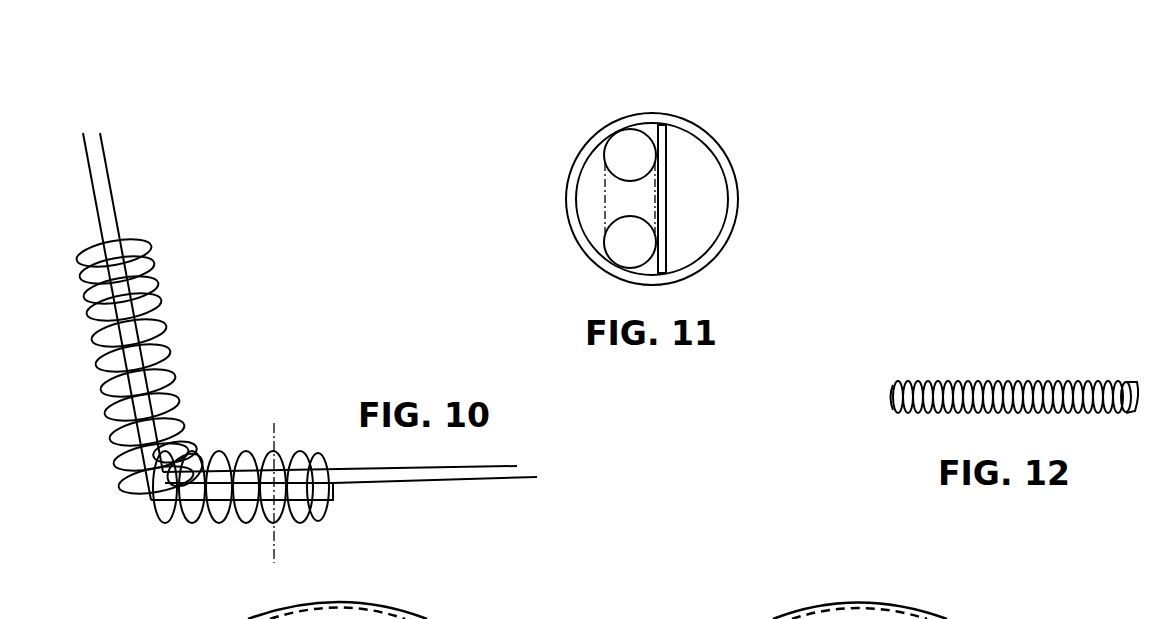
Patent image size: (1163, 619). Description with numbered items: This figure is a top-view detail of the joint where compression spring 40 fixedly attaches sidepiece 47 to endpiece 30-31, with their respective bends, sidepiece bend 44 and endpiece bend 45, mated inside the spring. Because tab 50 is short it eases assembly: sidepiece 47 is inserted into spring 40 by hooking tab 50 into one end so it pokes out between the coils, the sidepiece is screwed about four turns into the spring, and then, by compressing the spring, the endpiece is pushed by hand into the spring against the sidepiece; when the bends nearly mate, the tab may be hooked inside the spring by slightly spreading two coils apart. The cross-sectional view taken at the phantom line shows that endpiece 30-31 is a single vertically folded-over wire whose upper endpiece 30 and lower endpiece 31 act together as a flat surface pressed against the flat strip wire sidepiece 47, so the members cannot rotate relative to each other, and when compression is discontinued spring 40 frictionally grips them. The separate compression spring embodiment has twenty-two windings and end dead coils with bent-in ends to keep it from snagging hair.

In FIG. 10, the endpiece 30-31 is at (97, 162).
In FIG. 11, the endpiece 30-31 is at (617, 198).
In FIG. 11, the upper endpiece 30 is at (630, 160).
In FIG. 11, the lower endpiece 31 is at (622, 253).
In FIG. 10, the compression spring 40 is at (165, 260).
In FIG. 11, the compression spring 40 is at (733, 207).
In FIG. 10, the sidepiece bend 44 is at (188, 473).
In FIG. 10, the endpiece bend 45 is at (150, 502).
In FIG. 10, the sidepiece 47 is at (430, 477).
In FIG. 11, the sidepiece 47 is at (665, 142).
In FIG. 10, the tab 50 is at (178, 423).